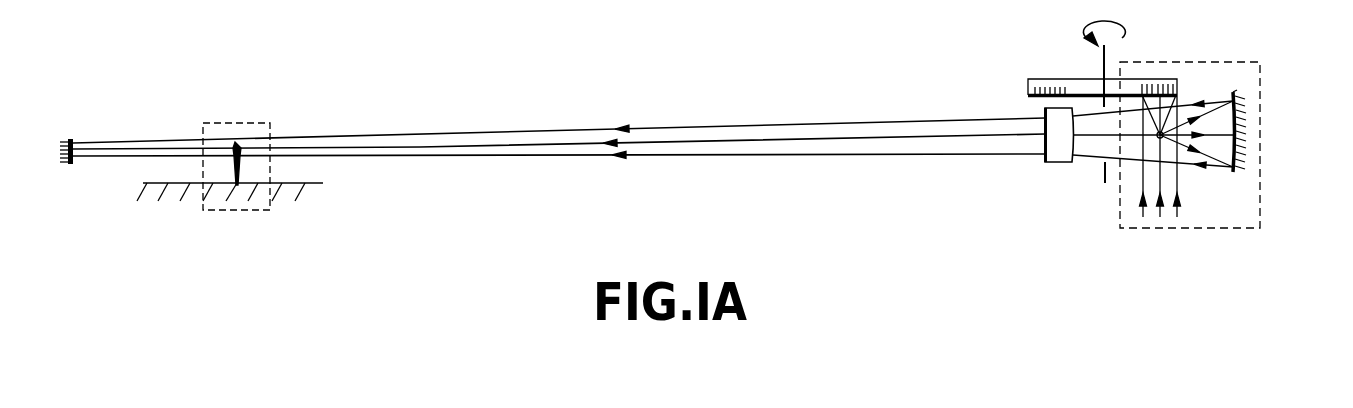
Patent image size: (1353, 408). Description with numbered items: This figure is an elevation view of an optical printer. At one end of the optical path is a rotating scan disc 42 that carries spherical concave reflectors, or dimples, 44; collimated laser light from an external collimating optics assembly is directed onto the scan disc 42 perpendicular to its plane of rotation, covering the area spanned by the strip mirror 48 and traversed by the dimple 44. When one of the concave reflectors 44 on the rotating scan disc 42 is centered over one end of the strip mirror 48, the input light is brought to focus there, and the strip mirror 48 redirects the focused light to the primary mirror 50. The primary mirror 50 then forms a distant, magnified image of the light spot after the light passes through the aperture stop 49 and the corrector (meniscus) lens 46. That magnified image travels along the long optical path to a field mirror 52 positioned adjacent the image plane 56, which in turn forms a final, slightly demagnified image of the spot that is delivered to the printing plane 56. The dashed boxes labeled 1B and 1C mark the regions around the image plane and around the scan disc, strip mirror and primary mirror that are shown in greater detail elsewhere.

The field mirror 52 is at (76, 139).
The detail region of FIG. 1B is at (250, 122).
The image plane 56 is at (323, 183).
The corrector lens 46 is at (1043, 163).
The scan disc 42 is at (1047, 78).
The spherical concave reflectors 44 is at (1043, 97).
The aperture stop 49 is at (1103, 177).
The detail region of FIG. 1C is at (1250, 228).
The strip mirror 48 is at (1160, 135).
The primary mirror 50 is at (1237, 91).